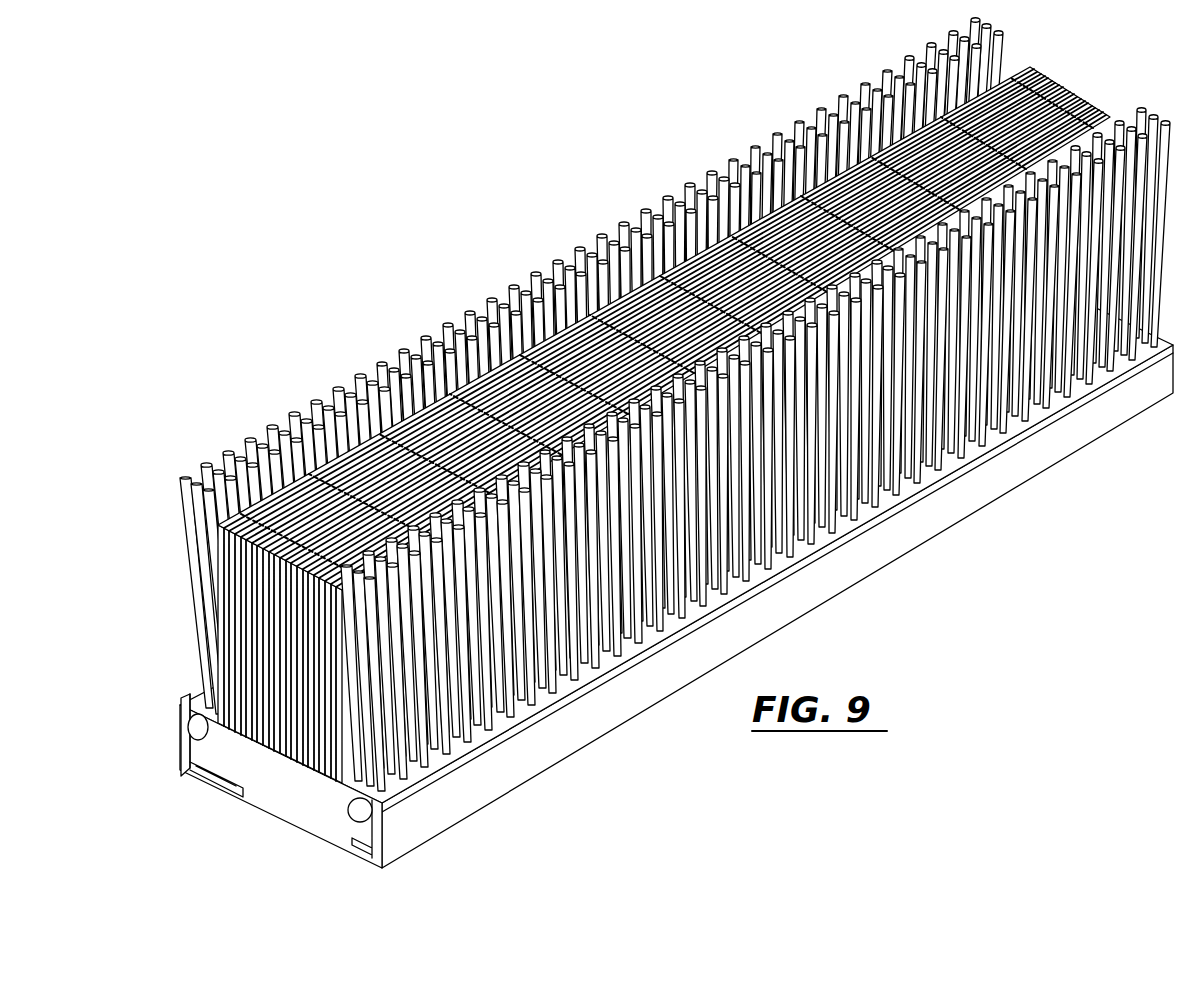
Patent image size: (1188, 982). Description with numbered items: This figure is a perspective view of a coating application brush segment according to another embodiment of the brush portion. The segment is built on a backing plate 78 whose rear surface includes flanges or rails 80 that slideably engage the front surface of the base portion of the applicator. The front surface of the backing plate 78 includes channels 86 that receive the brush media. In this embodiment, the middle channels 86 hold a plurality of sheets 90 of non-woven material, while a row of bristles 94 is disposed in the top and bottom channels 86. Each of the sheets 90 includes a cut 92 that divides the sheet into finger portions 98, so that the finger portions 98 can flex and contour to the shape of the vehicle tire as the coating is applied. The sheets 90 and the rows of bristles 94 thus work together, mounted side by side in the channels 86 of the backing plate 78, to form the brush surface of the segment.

The backing plate 78 is at (628, 699).
The flanges or rails 80 is at (210, 780).
The channels 86 is at (186, 758).
The sheets of non-woven material 90 is at (258, 518).
The cut 92 is at (293, 477).
The row of bristles 94 is at (190, 733).
The finger portions 98 is at (347, 432).